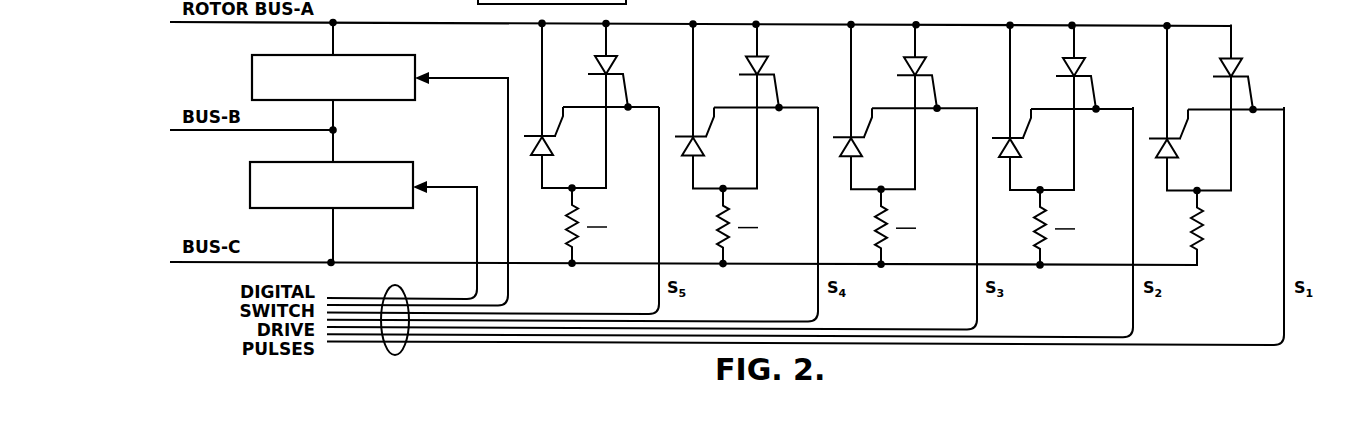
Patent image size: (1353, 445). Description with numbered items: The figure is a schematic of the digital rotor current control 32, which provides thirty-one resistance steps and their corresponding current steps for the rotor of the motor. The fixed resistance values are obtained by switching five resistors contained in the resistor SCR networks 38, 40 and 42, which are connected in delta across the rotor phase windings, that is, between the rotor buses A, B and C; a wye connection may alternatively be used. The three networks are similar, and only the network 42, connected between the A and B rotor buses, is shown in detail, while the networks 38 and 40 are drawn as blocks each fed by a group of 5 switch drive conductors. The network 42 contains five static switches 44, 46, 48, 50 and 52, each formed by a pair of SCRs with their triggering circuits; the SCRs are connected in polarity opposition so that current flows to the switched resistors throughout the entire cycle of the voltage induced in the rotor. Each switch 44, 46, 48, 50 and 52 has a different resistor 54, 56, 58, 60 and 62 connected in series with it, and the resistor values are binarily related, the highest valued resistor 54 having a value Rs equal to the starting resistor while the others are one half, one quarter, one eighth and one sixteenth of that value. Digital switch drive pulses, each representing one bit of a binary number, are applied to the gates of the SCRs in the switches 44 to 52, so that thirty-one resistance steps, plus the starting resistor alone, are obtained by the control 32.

The digital rotor current control 32 is at (748, 17).
The resistor SCR network 38 is at (252, 78).
The resistor SCR network 40 is at (250, 186).
The resistor SCR network 42 is at (524, 54).
The static switch 44 is at (1216, 110).
The static switch 46 is at (1062, 109).
The static switch 48 is at (905, 108).
The static switch 50 is at (746, 108).
The static switch 52 is at (591, 164).
The resistor 54 is at (1193, 228).
The resistor 56 is at (1036, 229).
The resistor 58 is at (878, 228).
The resistor 60 is at (720, 228).
The resistor 62 is at (567, 222).
The five-conductor bus 5 is at (473, 67).